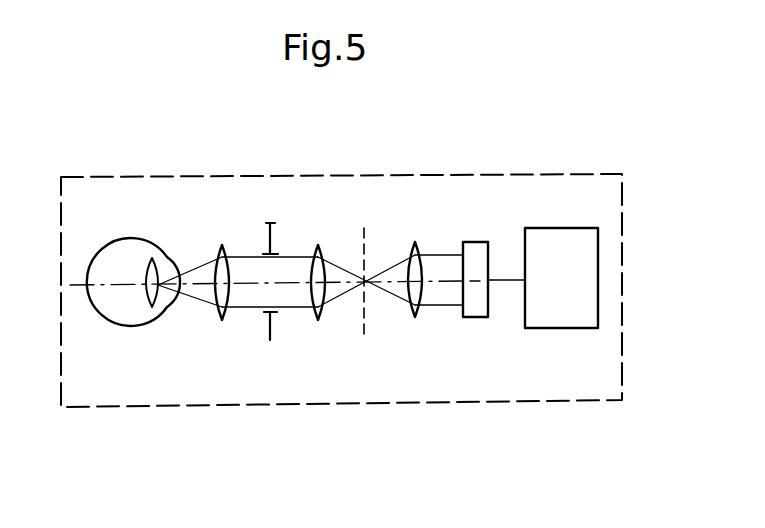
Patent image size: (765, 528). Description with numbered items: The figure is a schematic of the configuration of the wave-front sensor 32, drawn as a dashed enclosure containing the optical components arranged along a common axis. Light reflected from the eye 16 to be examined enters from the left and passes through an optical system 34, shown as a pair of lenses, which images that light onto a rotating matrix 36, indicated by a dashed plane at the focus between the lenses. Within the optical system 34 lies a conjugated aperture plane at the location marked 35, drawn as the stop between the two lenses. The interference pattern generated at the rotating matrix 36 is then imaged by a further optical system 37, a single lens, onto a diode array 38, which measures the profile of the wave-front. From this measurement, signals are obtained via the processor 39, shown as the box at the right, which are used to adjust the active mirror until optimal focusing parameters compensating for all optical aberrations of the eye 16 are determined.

The eye 16 is at (122, 253).
The wave-front sensor 32 is at (622, 288).
The optical system 34 is at (318, 249).
The conjugated aperture plane 35 is at (272, 331).
The rotating matrix 36 is at (365, 228).
The optical system 37 is at (418, 242).
The diode array 38 is at (477, 247).
The processor 39 is at (560, 242).